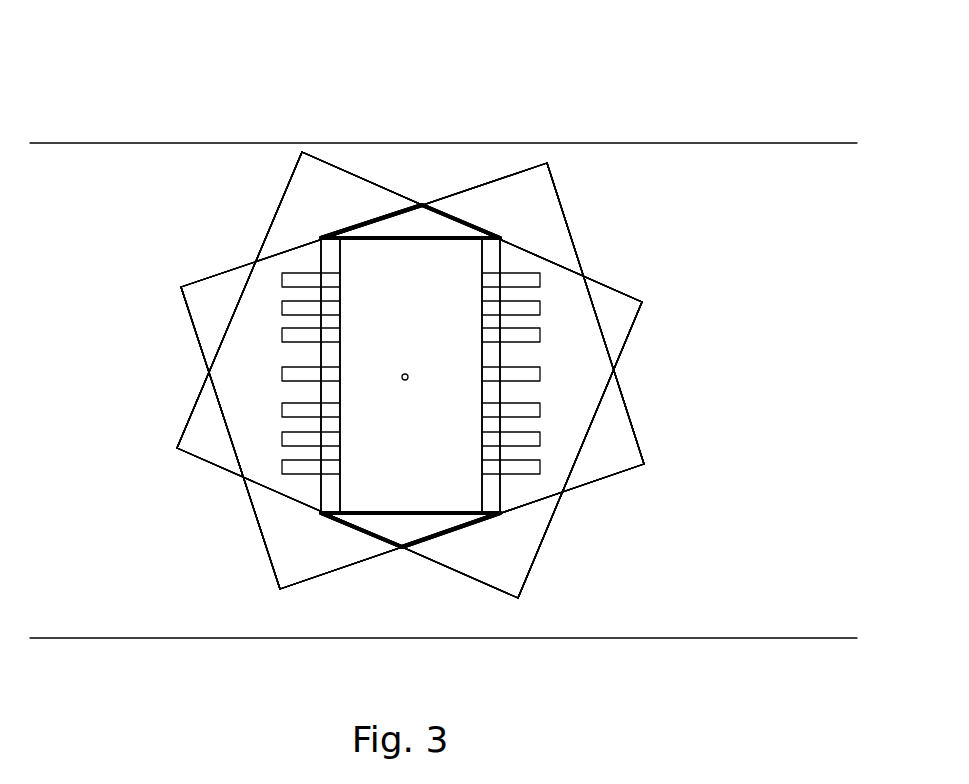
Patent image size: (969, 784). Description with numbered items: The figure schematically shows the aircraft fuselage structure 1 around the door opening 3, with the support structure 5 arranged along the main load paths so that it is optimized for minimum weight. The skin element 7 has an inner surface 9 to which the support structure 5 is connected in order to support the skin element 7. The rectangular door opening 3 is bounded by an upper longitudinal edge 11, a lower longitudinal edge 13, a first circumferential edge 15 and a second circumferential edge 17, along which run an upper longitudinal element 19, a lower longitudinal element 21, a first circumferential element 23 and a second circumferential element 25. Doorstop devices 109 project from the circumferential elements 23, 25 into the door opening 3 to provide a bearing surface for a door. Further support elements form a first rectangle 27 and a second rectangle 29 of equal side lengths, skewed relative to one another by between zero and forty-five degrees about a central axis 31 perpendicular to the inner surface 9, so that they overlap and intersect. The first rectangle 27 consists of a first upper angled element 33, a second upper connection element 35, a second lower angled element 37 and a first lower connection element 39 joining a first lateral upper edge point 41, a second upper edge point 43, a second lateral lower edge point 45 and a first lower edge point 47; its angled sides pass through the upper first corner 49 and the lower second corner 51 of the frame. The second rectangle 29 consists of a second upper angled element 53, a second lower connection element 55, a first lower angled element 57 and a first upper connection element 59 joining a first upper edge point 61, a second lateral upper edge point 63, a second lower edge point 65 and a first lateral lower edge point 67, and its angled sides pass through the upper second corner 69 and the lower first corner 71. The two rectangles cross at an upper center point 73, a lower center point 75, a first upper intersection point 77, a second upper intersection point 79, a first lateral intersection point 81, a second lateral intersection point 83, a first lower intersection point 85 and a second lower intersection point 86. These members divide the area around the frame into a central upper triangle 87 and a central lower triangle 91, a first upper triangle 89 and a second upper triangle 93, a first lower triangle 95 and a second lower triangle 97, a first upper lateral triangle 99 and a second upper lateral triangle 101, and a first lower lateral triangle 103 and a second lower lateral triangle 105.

The aircraft fuselage structure 1 is at (663, 137).
The door opening 3 is at (424, 367).
The support structure 5 is at (627, 477).
The skin element 7 is at (410, 375).
The inner surface 9 is at (211, 222).
The upper longitudinal edge 11 is at (410, 261).
The lower longitudinal edge 13 is at (410, 493).
The first circumferential edge 15 is at (395, 375).
The second circumferential edge 17 is at (432, 375).
The upper longitudinal element 19 is at (405, 242).
The lower longitudinal element 21 is at (400, 510).
The first circumferential element 23 is at (338, 297).
The second circumferential element 25 is at (482, 375).
The first rectangle 27 is at (523, 173).
The second rectangle 29 is at (352, 172).
The central axis 31 is at (402, 374).
The first upper angled element 33 is at (372, 217).
The second upper connection element 35 is at (568, 226).
The second lower angled element 37 is at (458, 532).
The first lower connection element 39 is at (261, 535).
The first lateral upper edge point 41 is at (181, 287).
The second upper edge point 43 is at (547, 163).
The second lateral lower edge point 45 is at (644, 464).
The first lower edge point 47 is at (280, 589).
The upper first corner 49 is at (321, 238).
The lower second corner 51 is at (500, 513).
The second upper angled element 53 is at (452, 215).
The second lower connection element 55 is at (625, 347).
The first lower angled element 57 is at (363, 532).
The first upper connection element 59 is at (194, 408).
The first upper edge point 61 is at (302, 152).
The second lateral upper edge point 63 is at (642, 302).
The second lower edge point 65 is at (518, 598).
The first lateral lower edge point 67 is at (177, 448).
The upper second corner 69 is at (500, 238).
The lower first corner 71 is at (321, 513).
The upper center point 73 is at (422, 205).
The lower center point 75 is at (402, 548).
The first upper intersection point 77 is at (256, 262).
The second upper intersection point 79 is at (583, 276).
The first lateral intersection point 81 is at (208, 372).
The second lateral intersection point 83 is at (614, 370).
The first lower intersection point 85 is at (243, 477).
The second lower intersection point 86 is at (562, 492).
The central upper triangle 87 is at (402, 234).
The first upper triangle 89 is at (317, 202).
The central lower triangle 91 is at (389, 542).
The second upper triangle 93 is at (507, 222).
The first lower triangle 95 is at (272, 535).
The second lower triangle 97 is at (499, 549).
The first upper lateral triangle 99 is at (204, 315).
The second upper lateral triangle 101 is at (601, 325).
The first lower lateral triangle 103 is at (188, 449).
The second lower lateral triangle 105 is at (603, 403).
The doorstop devices 109 is at (340, 410).